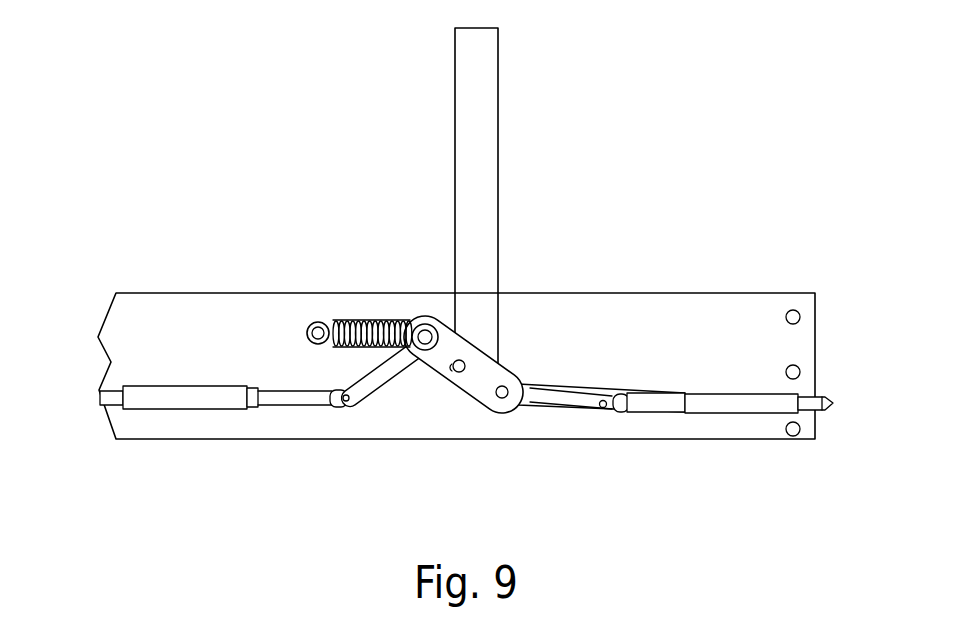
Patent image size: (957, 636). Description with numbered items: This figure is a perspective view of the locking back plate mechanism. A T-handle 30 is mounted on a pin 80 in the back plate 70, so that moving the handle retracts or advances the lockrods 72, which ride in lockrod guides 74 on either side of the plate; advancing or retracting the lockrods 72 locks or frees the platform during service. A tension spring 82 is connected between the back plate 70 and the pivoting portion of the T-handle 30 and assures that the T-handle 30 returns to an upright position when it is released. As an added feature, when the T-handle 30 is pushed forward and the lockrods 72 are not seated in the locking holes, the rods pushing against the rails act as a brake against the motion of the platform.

The T-handle 30 is at (477, 108).
The back plate 70 is at (663, 333).
The lockrods 72 is at (112, 397).
The lockrod guides 74 is at (193, 397).
The pin 80 is at (457, 372).
The tension spring 82 is at (368, 317).